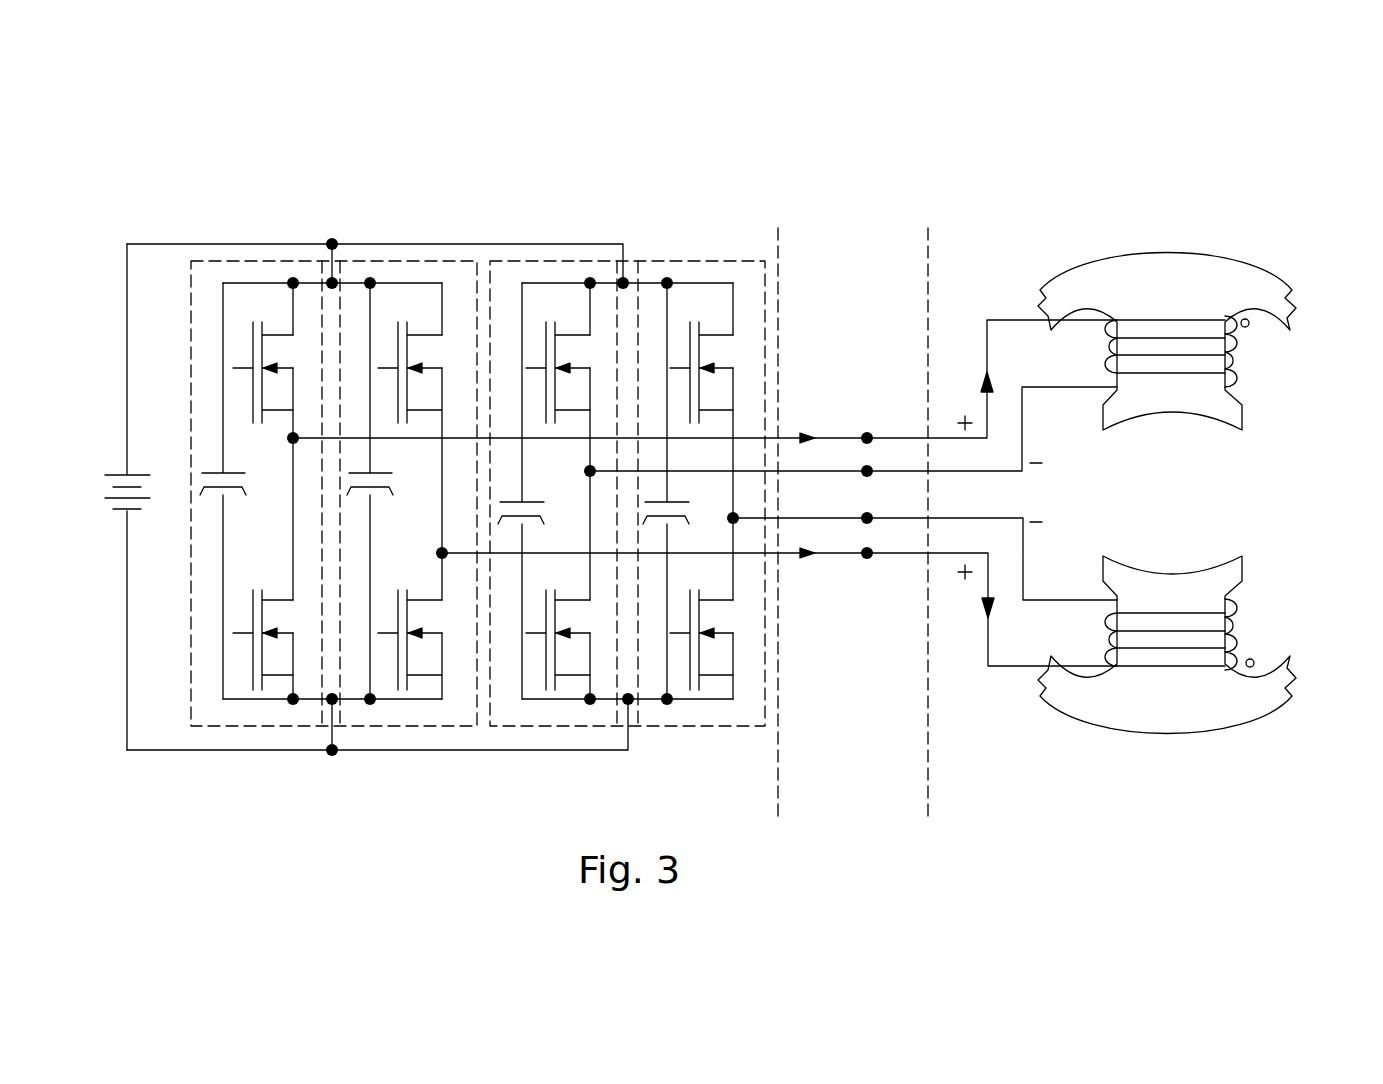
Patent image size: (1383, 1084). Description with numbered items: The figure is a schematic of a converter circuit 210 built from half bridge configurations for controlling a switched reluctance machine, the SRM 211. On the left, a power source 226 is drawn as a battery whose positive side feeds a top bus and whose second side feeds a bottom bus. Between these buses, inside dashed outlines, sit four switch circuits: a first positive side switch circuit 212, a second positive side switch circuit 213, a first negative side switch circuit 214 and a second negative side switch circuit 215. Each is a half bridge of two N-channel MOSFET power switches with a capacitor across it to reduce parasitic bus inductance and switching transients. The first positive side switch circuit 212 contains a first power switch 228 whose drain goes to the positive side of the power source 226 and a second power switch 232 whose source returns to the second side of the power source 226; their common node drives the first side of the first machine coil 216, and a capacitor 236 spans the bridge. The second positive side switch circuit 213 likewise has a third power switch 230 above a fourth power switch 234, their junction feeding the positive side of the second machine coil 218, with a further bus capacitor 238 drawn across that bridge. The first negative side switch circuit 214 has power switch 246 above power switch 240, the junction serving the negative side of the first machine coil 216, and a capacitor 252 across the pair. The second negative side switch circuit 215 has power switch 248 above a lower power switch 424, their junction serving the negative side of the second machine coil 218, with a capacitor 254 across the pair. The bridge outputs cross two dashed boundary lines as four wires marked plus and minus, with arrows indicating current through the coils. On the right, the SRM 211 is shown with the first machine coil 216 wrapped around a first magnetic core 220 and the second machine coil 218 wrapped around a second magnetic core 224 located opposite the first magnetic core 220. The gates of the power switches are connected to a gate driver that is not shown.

The converter circuit 210 is at (776, 207).
The SRM 211 is at (1209, 455).
The first positive side switch circuit 212 is at (195, 262).
The second positive side switch circuit 213 is at (450, 260).
The first negative side switch circuit 214 is at (508, 260).
The second negative side switch circuit 215 is at (720, 262).
The first machine coil 216 is at (1238, 360).
The second machine coil 218 is at (1243, 613).
The first magnetic core 220 is at (1232, 412).
The second magnetic core 224 is at (1232, 558).
The power source 226 is at (118, 473).
The first power switch 228 is at (245, 335).
The third power switch 230 is at (397, 337).
The second power switch 232 is at (250, 633).
The fourth power switch 234 is at (418, 678).
The capacitor 236 is at (217, 487).
The capacitor 238 is at (362, 487).
The power switch 240 is at (548, 668).
The power switch 246 is at (545, 350).
The power switch 248 is at (703, 365).
The capacitor 252 is at (510, 515).
The capacitor 254 is at (660, 515).
The transistor 424 is at (695, 668).